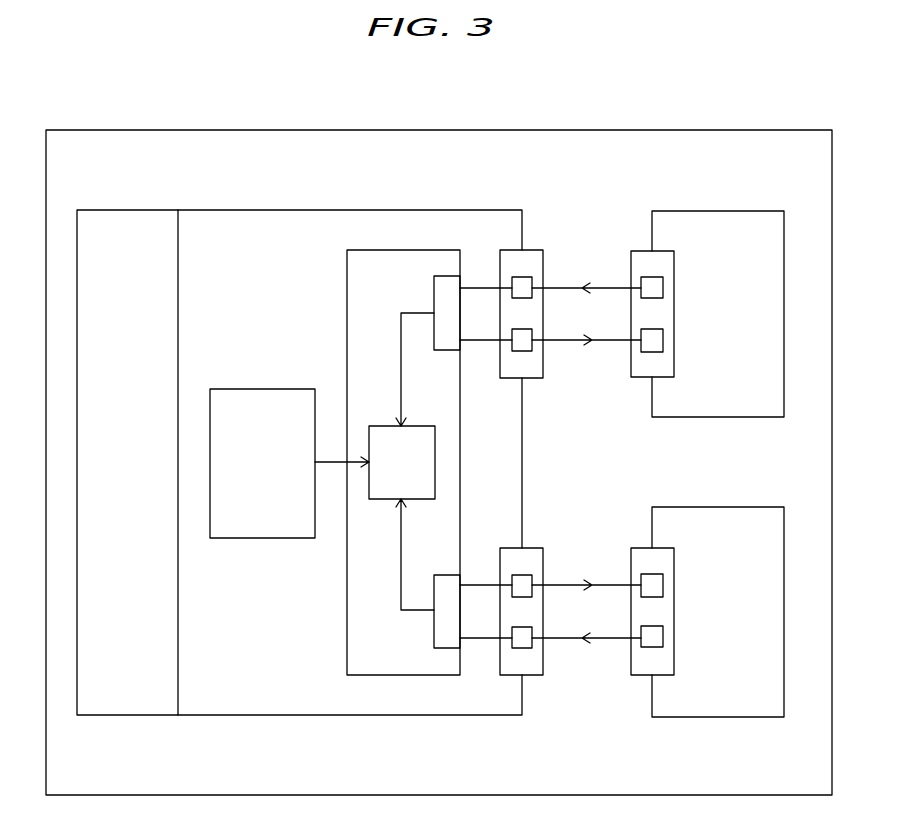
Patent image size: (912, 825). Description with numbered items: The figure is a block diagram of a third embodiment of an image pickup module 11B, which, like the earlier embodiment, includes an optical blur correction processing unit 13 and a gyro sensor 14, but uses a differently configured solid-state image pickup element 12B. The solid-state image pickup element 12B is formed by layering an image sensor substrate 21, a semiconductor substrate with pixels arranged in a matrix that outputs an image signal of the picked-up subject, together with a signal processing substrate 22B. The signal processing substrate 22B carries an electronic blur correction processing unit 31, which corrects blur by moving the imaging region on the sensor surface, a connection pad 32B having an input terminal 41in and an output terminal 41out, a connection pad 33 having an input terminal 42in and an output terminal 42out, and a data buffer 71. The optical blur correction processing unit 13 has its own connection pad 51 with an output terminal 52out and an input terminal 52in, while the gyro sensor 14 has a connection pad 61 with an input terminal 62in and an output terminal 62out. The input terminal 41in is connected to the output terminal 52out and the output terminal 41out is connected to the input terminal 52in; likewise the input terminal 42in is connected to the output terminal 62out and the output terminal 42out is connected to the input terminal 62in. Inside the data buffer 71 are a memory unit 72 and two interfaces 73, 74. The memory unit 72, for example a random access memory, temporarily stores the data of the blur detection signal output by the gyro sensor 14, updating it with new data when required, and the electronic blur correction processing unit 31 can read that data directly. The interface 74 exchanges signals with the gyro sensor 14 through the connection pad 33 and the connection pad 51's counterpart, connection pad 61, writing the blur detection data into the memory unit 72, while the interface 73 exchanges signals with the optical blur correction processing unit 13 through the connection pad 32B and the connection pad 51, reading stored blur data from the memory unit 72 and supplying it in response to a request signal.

The image pickup module 11B is at (440, 128).
The solid-state image pickup element 12B is at (297, 209).
The optical blur correction processing unit 13 is at (716, 210).
The gyro sensor 14 is at (720, 718).
The image sensor substrate 21 is at (126, 716).
The signal processing substrate 22B is at (355, 716).
The electronic blur correction processing unit 31 is at (263, 388).
The connection pad 32B is at (536, 249).
The connection pad 33 is at (534, 676).
The input terminal 41in is at (512, 276).
The output terminal 41out is at (528, 352).
The output terminal 42out is at (525, 574).
The input terminal 42in is at (521, 649).
The connection pad 51 is at (640, 250).
The output terminal 52out is at (652, 277).
The input terminal 52in is at (652, 329).
The connection pad 61 is at (641, 676).
The input terminal 62in is at (652, 577).
The output terminal 62out is at (652, 626).
The data buffer 71 is at (400, 250).
The memory unit 72 is at (386, 425).
The interface 73 is at (433, 290).
The interface 74 is at (433, 629).